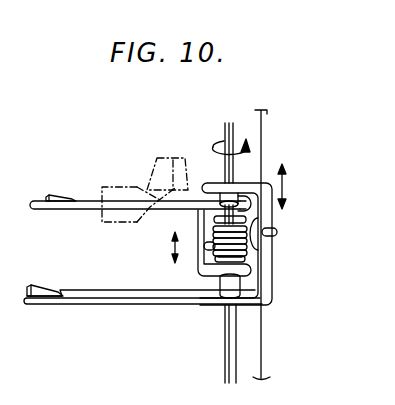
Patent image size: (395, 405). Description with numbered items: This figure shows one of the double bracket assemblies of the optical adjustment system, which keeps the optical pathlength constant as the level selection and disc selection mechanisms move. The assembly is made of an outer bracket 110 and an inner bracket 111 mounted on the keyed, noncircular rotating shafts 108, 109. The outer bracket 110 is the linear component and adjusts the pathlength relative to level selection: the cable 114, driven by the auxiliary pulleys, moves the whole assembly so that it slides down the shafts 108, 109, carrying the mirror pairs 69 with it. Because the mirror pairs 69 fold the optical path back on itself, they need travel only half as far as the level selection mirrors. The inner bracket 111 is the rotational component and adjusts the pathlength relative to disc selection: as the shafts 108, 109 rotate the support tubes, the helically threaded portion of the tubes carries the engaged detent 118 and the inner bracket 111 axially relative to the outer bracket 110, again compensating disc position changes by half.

The paired mirrors 69 is at (168, 168).
The shaft 108 is at (141, 322).
The shaft 109 is at (224, 330).
The outer bracket 110 is at (270, 259).
The inner bracket 111 is at (192, 262).
The cable 114 is at (265, 143).
The detent 118 is at (199, 210).